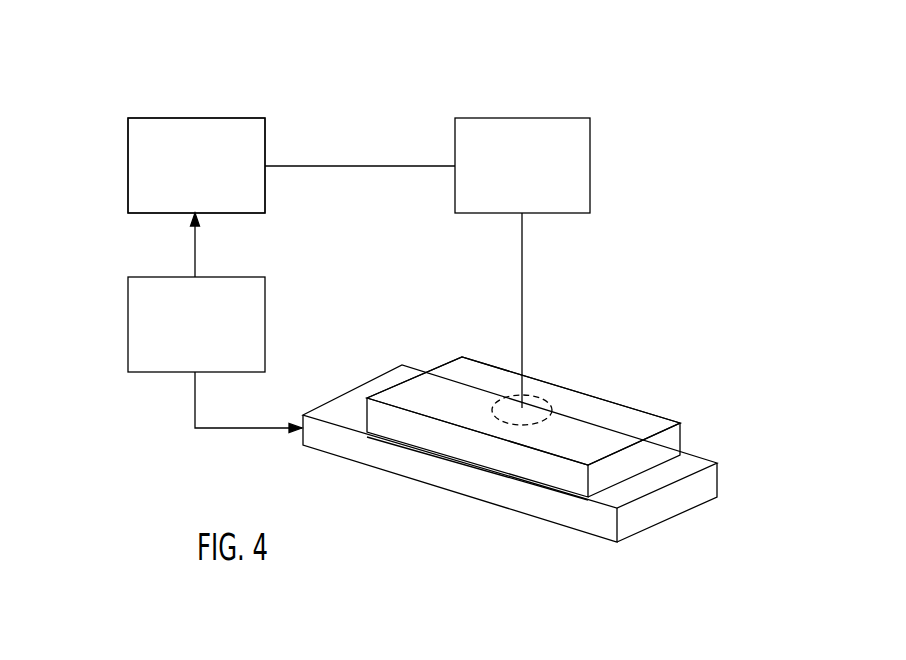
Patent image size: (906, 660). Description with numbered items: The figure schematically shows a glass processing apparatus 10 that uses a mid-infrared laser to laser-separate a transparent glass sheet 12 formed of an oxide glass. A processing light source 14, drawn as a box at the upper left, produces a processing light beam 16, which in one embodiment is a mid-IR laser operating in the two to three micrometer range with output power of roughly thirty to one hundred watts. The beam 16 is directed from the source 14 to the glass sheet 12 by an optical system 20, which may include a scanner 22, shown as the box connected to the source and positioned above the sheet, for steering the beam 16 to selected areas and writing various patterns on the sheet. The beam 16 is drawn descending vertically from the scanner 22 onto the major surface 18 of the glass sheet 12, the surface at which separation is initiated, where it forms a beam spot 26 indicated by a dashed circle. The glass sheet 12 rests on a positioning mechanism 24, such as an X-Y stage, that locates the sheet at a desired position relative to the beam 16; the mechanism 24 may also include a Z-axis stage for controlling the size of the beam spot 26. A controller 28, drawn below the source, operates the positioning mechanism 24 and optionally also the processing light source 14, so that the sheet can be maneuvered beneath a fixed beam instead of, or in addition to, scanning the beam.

The glass processing apparatus 10 is at (640, 148).
The glass sheet 12 is at (625, 422).
The processing light source 14 is at (200, 110).
The processing light beam 16 is at (522, 308).
The major surface 18 is at (575, 407).
The optical system 20 is at (117, 157).
The scanner 22 is at (543, 110).
The positioning mechanism 24 is at (690, 525).
The beam spot 26 is at (493, 417).
The controller 28 is at (117, 340).